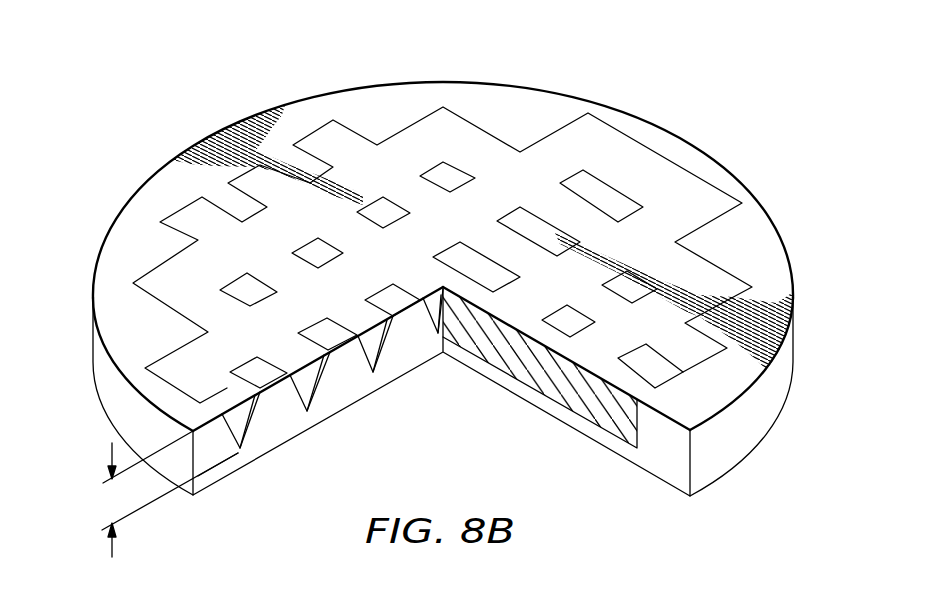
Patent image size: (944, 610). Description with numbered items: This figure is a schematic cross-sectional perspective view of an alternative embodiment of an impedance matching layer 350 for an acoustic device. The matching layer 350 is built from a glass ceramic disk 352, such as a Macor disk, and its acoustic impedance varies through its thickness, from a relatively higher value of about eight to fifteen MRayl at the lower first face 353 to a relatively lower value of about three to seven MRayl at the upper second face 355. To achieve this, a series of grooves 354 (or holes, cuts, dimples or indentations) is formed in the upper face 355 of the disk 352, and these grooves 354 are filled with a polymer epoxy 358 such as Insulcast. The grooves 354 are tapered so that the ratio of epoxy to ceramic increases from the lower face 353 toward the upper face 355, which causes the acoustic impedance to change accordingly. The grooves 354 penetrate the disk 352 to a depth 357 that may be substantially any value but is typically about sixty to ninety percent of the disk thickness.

The matching layer 350 is at (292, 78).
The glass ceramic disk 352 is at (130, 322).
The first face 353 is at (652, 476).
The grooves 354 is at (660, 156).
The second face 355 is at (520, 113).
The depth 357 is at (103, 497).
The polymer epoxy 358 is at (314, 377).